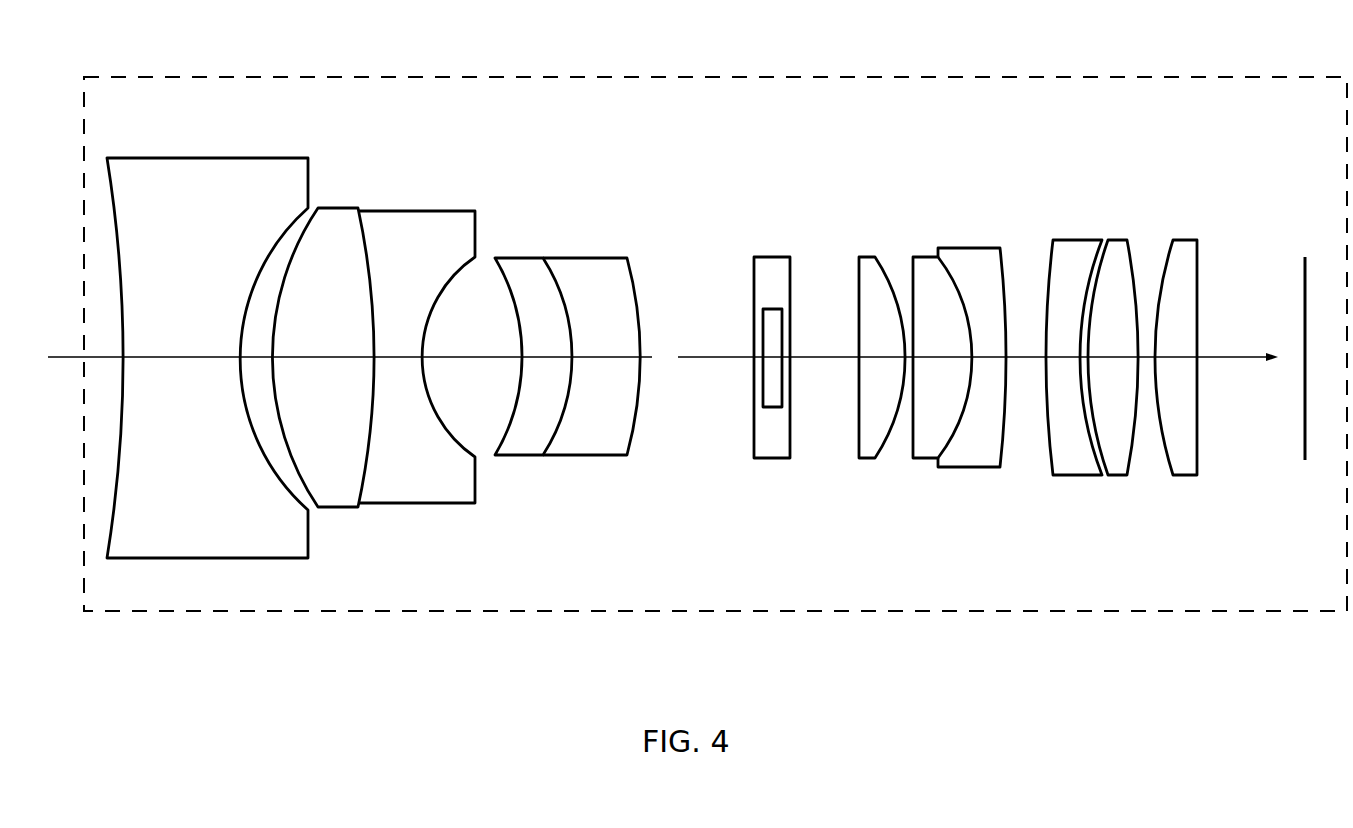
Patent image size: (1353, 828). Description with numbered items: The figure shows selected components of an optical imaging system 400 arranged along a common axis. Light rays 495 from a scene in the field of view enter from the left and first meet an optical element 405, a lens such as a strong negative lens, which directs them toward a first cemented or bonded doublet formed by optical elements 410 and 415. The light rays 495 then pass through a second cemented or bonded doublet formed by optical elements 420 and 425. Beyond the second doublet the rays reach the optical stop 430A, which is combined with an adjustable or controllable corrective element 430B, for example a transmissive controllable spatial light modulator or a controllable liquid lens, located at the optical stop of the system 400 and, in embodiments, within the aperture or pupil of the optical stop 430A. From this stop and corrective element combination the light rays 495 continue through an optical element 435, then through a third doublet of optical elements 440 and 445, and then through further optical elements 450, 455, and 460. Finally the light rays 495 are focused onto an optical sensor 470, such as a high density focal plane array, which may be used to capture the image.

The optical system 400 is at (584, 68).
The optical element 405 is at (148, 147).
The optical element 410 is at (329, 193).
The optical element 415 is at (393, 198).
The optical element 420 is at (508, 247).
The optical element 425 is at (593, 247).
The optical stop 430A is at (769, 243).
The corrective element 430B is at (774, 295).
The optical element 435 is at (866, 243).
The optical element 440 is at (924, 243).
The optical element 445 is at (968, 235).
The optical element 450 is at (1073, 228).
The optical element 455 is at (1116, 228).
The optical element 460 is at (1191, 228).
The optical sensor 470 is at (1290, 443).
The light rays 495 is at (663, 357).